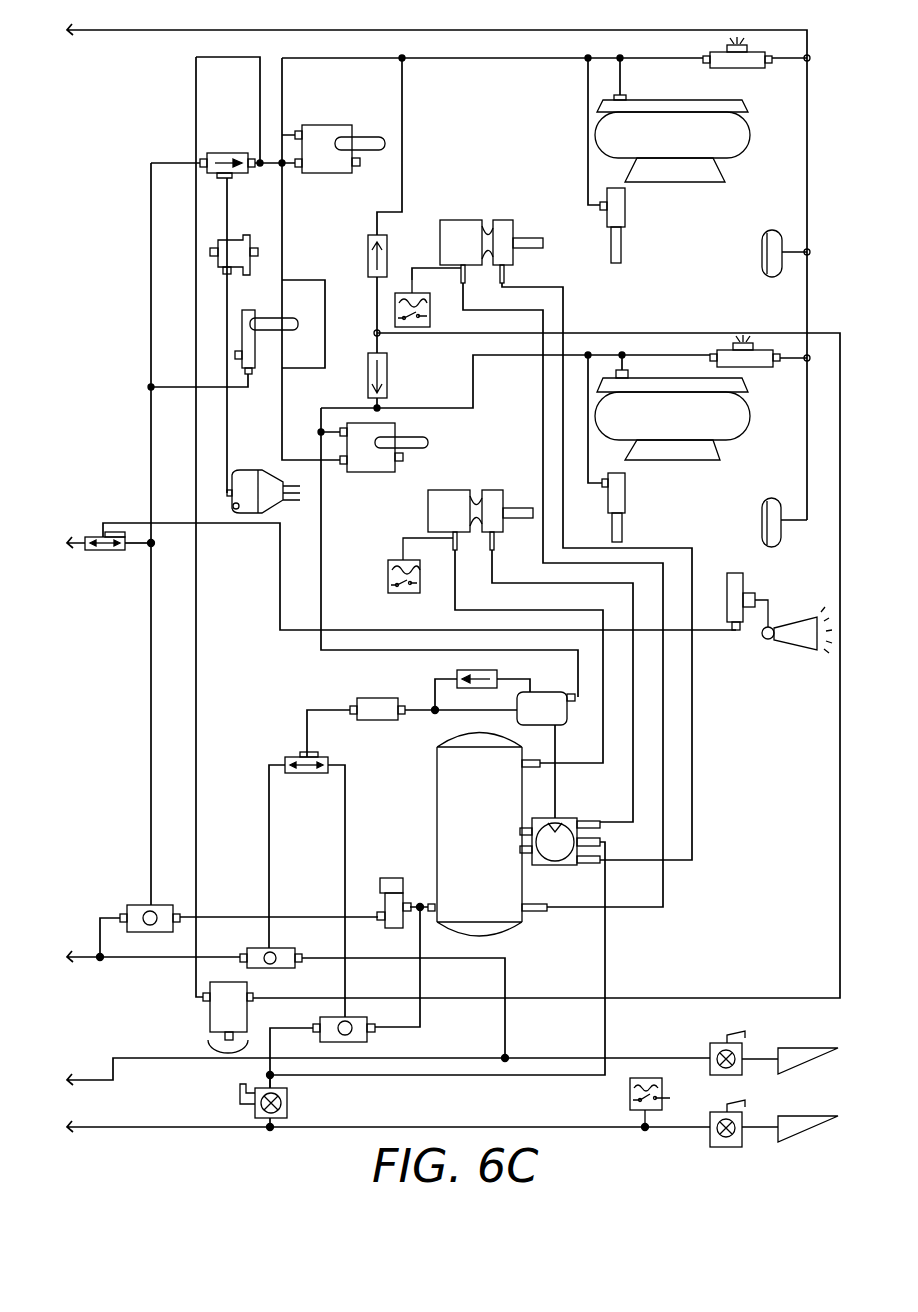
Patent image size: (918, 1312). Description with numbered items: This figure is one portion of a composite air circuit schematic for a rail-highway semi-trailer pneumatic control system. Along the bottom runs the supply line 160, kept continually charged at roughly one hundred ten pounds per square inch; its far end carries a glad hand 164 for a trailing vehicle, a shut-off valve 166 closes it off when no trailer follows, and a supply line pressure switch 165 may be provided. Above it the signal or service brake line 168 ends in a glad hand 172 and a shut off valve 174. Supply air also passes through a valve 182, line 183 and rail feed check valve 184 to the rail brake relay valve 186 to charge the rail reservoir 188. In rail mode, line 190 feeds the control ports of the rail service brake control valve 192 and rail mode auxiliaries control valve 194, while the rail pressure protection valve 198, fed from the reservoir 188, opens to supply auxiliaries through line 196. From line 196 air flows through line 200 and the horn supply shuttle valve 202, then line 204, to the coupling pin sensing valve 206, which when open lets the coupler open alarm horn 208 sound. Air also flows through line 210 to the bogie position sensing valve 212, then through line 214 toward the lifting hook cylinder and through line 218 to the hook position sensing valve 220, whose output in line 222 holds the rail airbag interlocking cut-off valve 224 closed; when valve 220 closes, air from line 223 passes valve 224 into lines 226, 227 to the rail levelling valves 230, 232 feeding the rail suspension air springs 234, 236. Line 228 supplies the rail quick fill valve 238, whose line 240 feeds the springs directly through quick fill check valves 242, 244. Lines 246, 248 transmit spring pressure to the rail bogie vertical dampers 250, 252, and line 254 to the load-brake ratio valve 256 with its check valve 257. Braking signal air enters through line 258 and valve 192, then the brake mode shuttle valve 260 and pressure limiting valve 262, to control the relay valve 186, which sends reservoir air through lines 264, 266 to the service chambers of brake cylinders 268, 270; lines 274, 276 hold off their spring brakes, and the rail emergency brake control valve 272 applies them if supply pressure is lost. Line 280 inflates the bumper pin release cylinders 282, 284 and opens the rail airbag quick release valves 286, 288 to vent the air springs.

The supply line 160 is at (401, 1126).
The glad hand 164 is at (820, 1134).
The supply line pressure switch 165 is at (630, 1090).
The shut-off valve 166 is at (722, 1147).
The signal or service brake line 168 is at (618, 1058).
The glad hand 172 is at (819, 1051).
The shut off valve 174 is at (724, 1075).
The valve 182 is at (287, 1086).
The line 183 is at (606, 968).
The rail feed check valve 184 is at (600, 842).
The rail brake relay valve 186 is at (542, 865).
The rail reservoir 188 is at (437, 823).
The line 190 is at (170, 958).
The rail service brake control valve 192 is at (270, 968).
The rail mode auxiliaries control valve 194 is at (138, 904).
The line 196 is at (151, 780).
The rail pressure protection valve 198 is at (416, 860).
The line 200 is at (141, 554).
The horn supply shuttle valve 202 is at (86, 532).
The line 204 is at (226, 528).
The coupling pin sensing valve 206 is at (735, 577).
The horn 208 is at (792, 645).
The line 210 is at (200, 390).
The bogie position sensing valve 212 is at (255, 350).
The line 214 is at (234, 431).
The line 218 is at (227, 325).
The hook position sensing valve 220 is at (231, 276).
The line 222 is at (244, 241).
The line 223 is at (151, 238).
The rail airbag interlocking cut-off valve 224 is at (232, 180).
The line 226 is at (262, 160).
The line 227 is at (336, 364).
The line 228 is at (196, 640).
The rail levelling valve 230 is at (333, 173).
The rail levelling valve 232 is at (398, 470).
The rail suspension air spring 234 is at (728, 154).
The rail suspension air spring 236 is at (724, 434).
The rail quick fill valve 238 is at (210, 1022).
The line 240 is at (589, 998).
The quick fill check valve 242 is at (368, 252).
The quick fill check valve 244 is at (387, 372).
The line 246 is at (595, 145).
The line 248 is at (598, 432).
The rail bogie vertical damper 250 is at (625, 212).
The rail bogie vertical damper 252 is at (625, 492).
The line 254 is at (327, 545).
The load-brake ratio valve 256 is at (570, 668).
The check valve 257 is at (455, 672).
The line 258 is at (505, 1023).
The brake mode shuttle valve 260 is at (288, 756).
The pressure limiting valve 262 is at (392, 698).
The line 264 is at (634, 814).
The line 266 is at (692, 830).
The brake cylinder 268 is at (520, 204).
The brake cylinder 270 is at (511, 490).
The rail emergency brake control valve 272 is at (372, 1039).
The line 274 is at (562, 766).
The line 276 is at (663, 907).
The line 280 is at (430, 30).
The bumper pin release cylinder 282 is at (795, 208).
The bumper pin release cylinder 284 is at (800, 478).
The rail airbag quick release valve 286 is at (724, 68).
The rail airbag quick release valve 288 is at (748, 366).